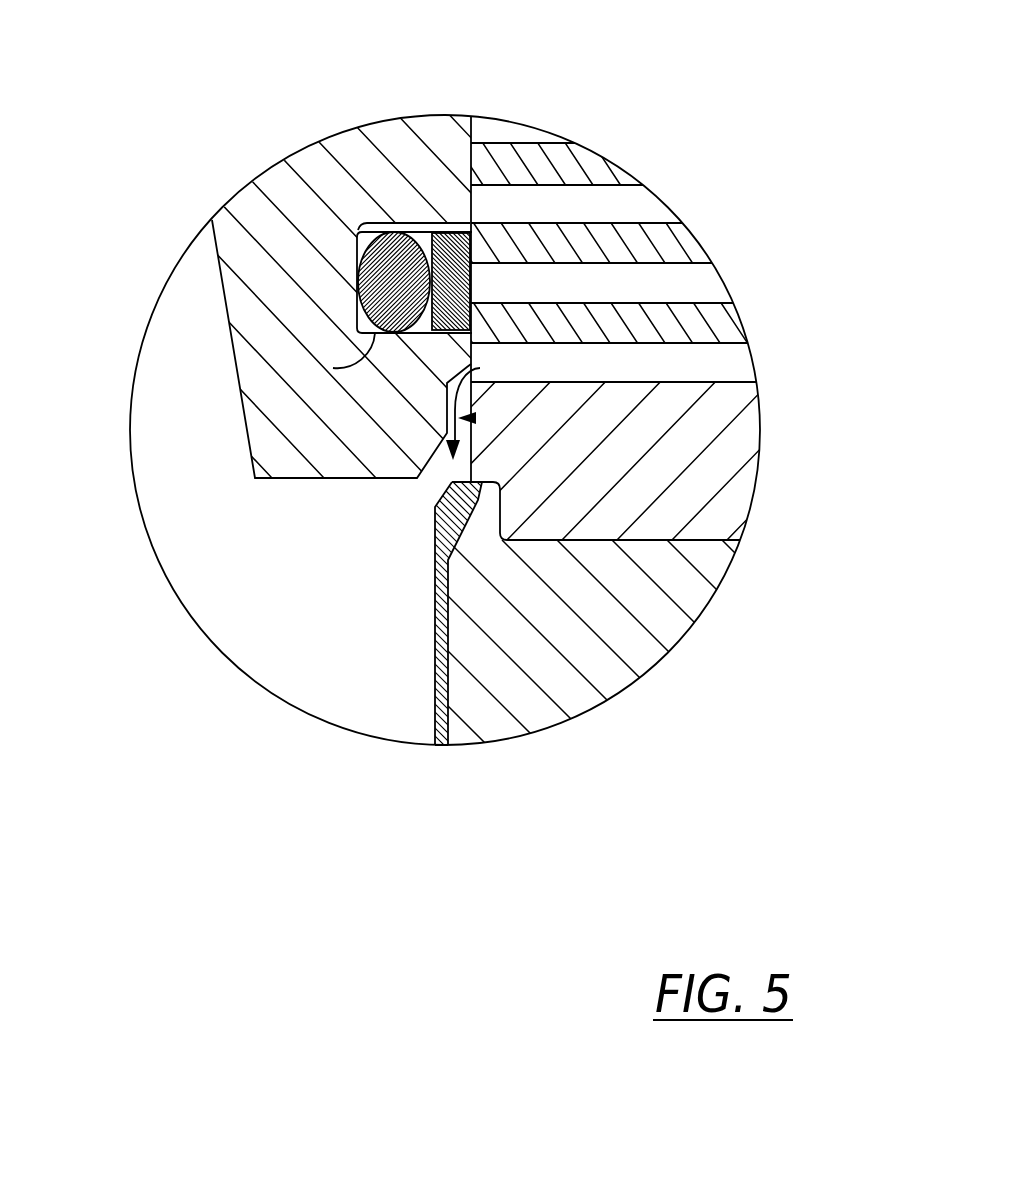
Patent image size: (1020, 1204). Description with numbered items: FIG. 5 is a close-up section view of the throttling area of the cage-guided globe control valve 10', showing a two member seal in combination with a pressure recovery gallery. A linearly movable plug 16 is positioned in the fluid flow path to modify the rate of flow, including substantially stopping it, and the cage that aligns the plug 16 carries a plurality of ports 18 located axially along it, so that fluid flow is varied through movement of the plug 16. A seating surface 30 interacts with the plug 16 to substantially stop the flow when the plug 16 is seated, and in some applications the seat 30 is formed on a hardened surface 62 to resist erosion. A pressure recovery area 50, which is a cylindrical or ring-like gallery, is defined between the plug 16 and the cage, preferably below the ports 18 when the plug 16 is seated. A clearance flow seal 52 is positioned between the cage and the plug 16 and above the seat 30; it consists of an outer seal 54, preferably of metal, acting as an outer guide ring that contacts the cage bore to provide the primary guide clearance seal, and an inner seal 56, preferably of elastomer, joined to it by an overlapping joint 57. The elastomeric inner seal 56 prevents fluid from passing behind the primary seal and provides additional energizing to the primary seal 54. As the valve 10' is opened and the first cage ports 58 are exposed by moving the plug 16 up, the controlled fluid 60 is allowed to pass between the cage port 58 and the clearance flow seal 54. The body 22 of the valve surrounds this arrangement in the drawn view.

The cage-guided globe control valve 10' is at (107, 904).
The plug 16 is at (272, 157).
The ports 18 is at (710, 284).
The fitting body 22 is at (570, 637).
The seating surface 30 is at (440, 497).
The pressure recovery area 50 is at (470, 418).
The clearance flow seal 52 is at (410, 226).
The outer seal 54 is at (477, 232).
The inner seal 56 is at (380, 228).
The overlapping joint 57 is at (333, 368).
The first cage ports 58 is at (738, 364).
The controlled fluid 60 is at (480, 368).
The hardened surface 62 is at (434, 648).